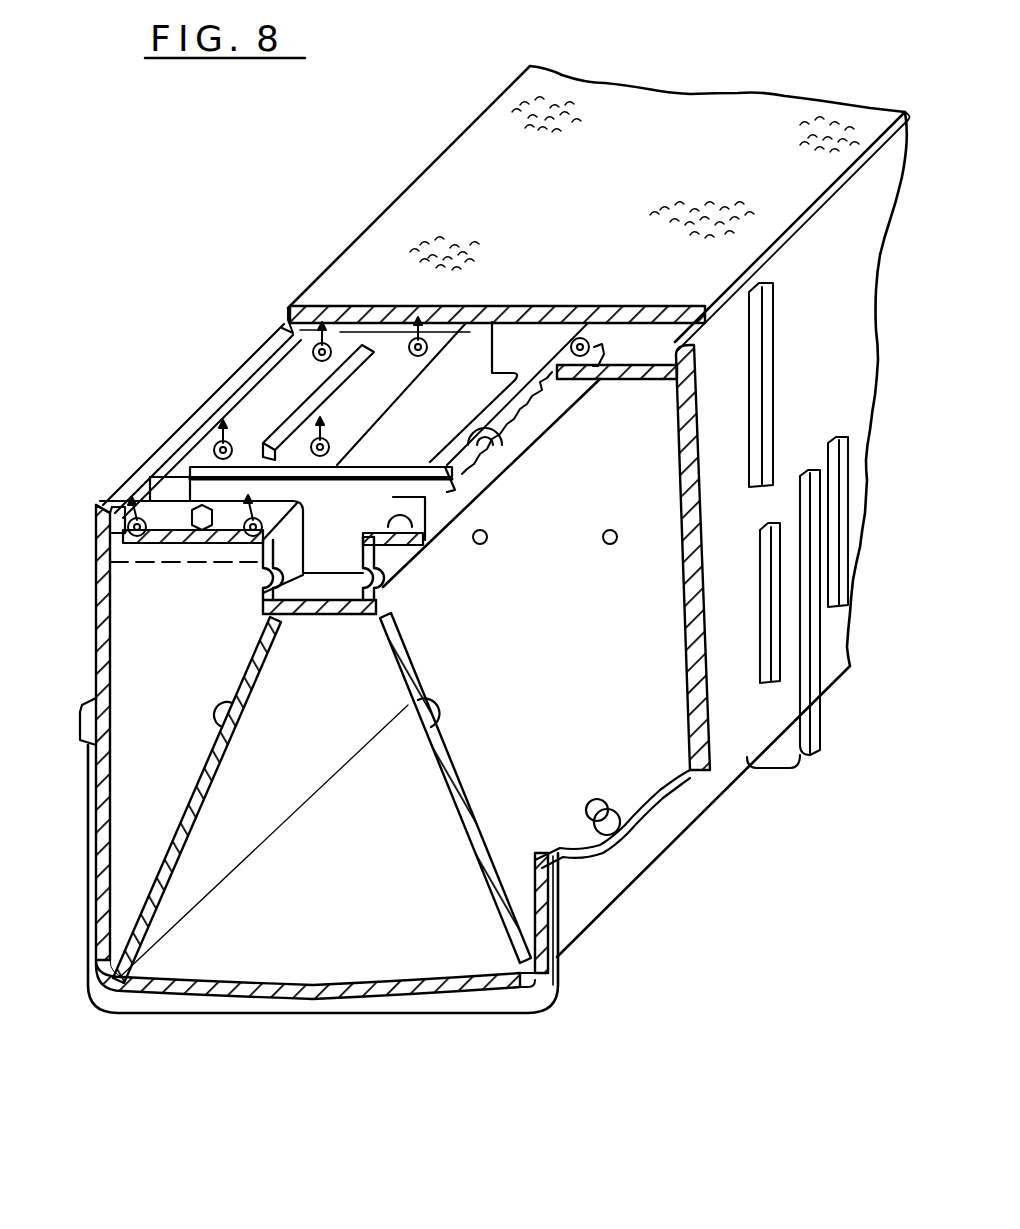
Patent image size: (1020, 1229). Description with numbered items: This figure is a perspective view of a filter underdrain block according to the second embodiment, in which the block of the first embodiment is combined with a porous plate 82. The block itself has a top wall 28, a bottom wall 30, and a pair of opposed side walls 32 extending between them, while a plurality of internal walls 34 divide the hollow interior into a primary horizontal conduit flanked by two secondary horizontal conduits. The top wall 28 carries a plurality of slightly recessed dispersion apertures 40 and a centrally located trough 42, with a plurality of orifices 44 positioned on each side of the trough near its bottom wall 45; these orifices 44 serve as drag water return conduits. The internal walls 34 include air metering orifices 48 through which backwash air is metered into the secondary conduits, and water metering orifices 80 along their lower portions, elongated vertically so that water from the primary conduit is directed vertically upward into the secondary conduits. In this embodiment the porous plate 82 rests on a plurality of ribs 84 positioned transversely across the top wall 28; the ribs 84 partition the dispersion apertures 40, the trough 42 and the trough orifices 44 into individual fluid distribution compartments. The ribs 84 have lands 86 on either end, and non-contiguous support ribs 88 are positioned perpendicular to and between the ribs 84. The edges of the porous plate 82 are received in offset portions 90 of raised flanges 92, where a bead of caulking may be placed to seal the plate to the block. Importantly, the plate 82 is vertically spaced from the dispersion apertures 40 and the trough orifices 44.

The top wall 28 is at (267, 412).
The bottom wall 30 is at (393, 993).
The side walls 32 is at (694, 512).
The internal walls 34 is at (192, 788).
The dispersion apertures 40 is at (300, 358).
The trough 42 is at (466, 372).
The orifices 44 is at (267, 583).
The bottom wall of the trough 45 is at (316, 616).
The air metering orifices 48 is at (488, 532).
The water metering orifices 80 is at (603, 806).
The porous plate 82 is at (407, 220).
The ribs 84 is at (200, 457).
The lands 86 is at (170, 473).
The support ribs 88 is at (370, 340).
The offset portions 90 is at (287, 326).
The raised flanges 92 is at (100, 540).